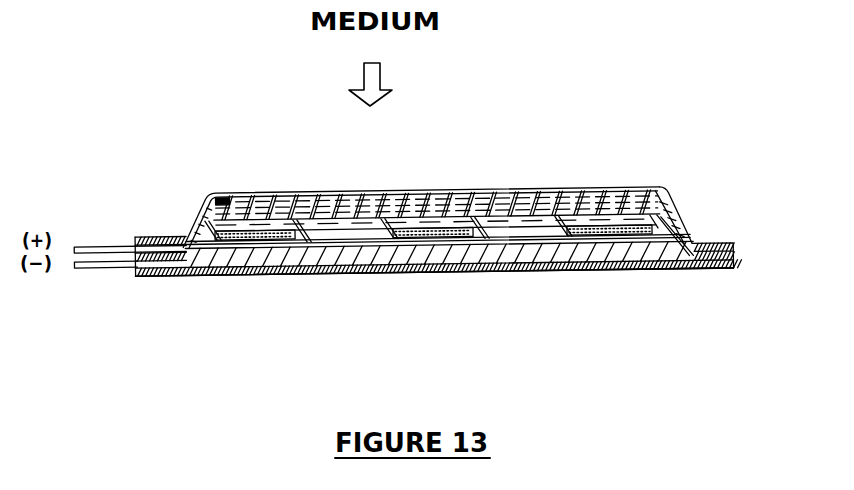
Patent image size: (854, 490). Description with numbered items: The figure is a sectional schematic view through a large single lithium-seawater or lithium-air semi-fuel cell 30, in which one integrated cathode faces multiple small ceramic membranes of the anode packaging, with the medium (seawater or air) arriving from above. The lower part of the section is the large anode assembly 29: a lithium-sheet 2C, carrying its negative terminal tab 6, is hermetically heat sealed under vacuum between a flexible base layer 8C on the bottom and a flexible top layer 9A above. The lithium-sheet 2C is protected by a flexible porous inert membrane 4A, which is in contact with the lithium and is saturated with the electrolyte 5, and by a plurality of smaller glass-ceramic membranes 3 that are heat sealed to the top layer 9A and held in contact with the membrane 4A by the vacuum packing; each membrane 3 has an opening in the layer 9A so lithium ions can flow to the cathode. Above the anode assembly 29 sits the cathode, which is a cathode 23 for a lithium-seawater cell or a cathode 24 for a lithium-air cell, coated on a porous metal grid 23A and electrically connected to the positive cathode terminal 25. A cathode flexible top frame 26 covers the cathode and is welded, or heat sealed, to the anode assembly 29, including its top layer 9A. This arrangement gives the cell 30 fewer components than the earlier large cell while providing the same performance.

The lithium-sheet 2C is at (512, 250).
The glass-ceramic membranes 3 is at (258, 232).
The flexible porous inert membrane 4A is at (327, 245).
The electrolyte 5 is at (327, 245).
The terminal tab 6 is at (98, 270).
The flexible base layer 8C is at (398, 273).
The top layer 9A is at (690, 222).
The cathode 23 is at (388, 196).
The cathode 24 is at (388, 196).
The porous metal grid 23A is at (566, 200).
The cathode terminal 25 is at (90, 245).
The cathode flexible top frame 26 is at (203, 199).
The anode assembly 29 is at (717, 272).
The semi-fuel cell 30 is at (639, 404).